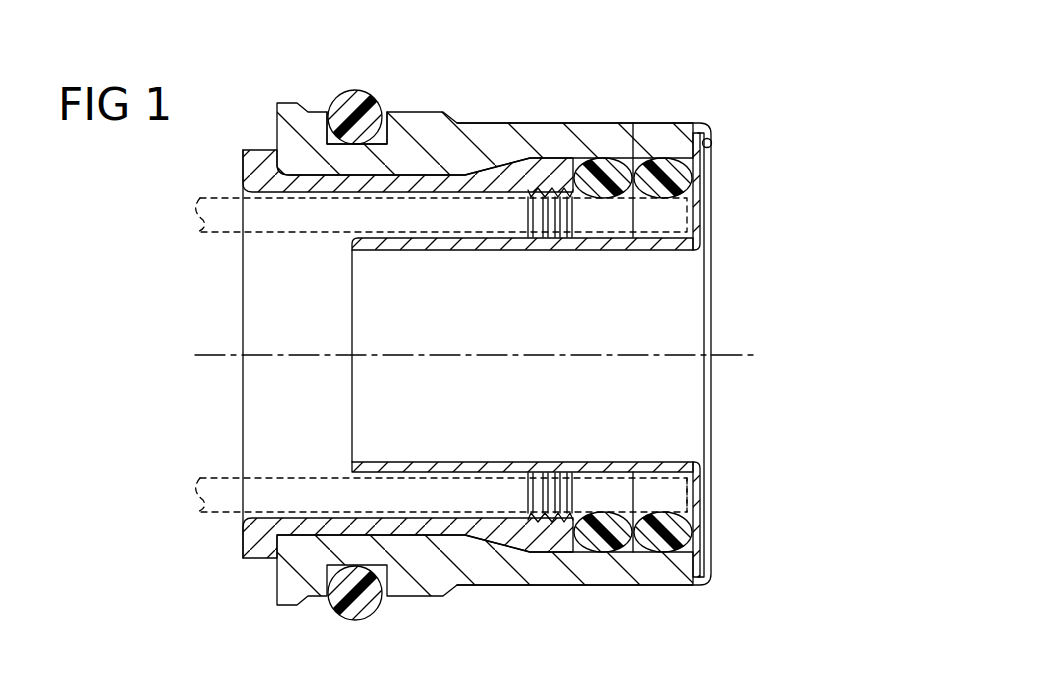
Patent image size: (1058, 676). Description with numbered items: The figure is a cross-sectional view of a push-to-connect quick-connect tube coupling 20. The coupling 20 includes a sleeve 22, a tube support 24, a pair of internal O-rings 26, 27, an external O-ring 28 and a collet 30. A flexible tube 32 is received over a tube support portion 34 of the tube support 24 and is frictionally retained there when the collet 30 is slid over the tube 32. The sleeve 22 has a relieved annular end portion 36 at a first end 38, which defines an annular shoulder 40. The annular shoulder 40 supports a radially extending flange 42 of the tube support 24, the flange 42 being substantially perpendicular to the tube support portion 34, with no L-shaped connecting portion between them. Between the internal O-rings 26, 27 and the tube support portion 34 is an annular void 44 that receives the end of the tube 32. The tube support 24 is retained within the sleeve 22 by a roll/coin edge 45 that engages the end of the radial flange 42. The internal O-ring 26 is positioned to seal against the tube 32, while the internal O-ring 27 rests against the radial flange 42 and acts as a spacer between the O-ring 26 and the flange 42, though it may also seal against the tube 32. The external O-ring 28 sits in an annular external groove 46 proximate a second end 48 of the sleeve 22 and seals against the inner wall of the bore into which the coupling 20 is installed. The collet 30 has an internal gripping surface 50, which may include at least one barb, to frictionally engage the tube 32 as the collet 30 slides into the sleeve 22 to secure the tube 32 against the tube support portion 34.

The quick-connect tube coupling 20 is at (246, 87).
The sleeve 22 is at (506, 130).
The tube support 24 is at (668, 292).
The internal O-ring 26 is at (612, 160).
The internal O-ring 27 is at (648, 152).
The external O-ring 28 is at (352, 88).
The collet 30 is at (243, 553).
The flexible tube 32 is at (222, 232).
The tube support portion 34 is at (453, 462).
The relieved annular end portion 36 is at (703, 155).
The first end 38 is at (707, 128).
The annular shoulder 40 is at (705, 576).
The radially extending flange 42 is at (697, 204).
The annular void 44 is at (663, 495).
The roll/coin edge 45 is at (711, 142).
The annular external groove 46 is at (386, 100).
The second end 48 is at (275, 134).
The internal gripping surface 50 is at (553, 510).